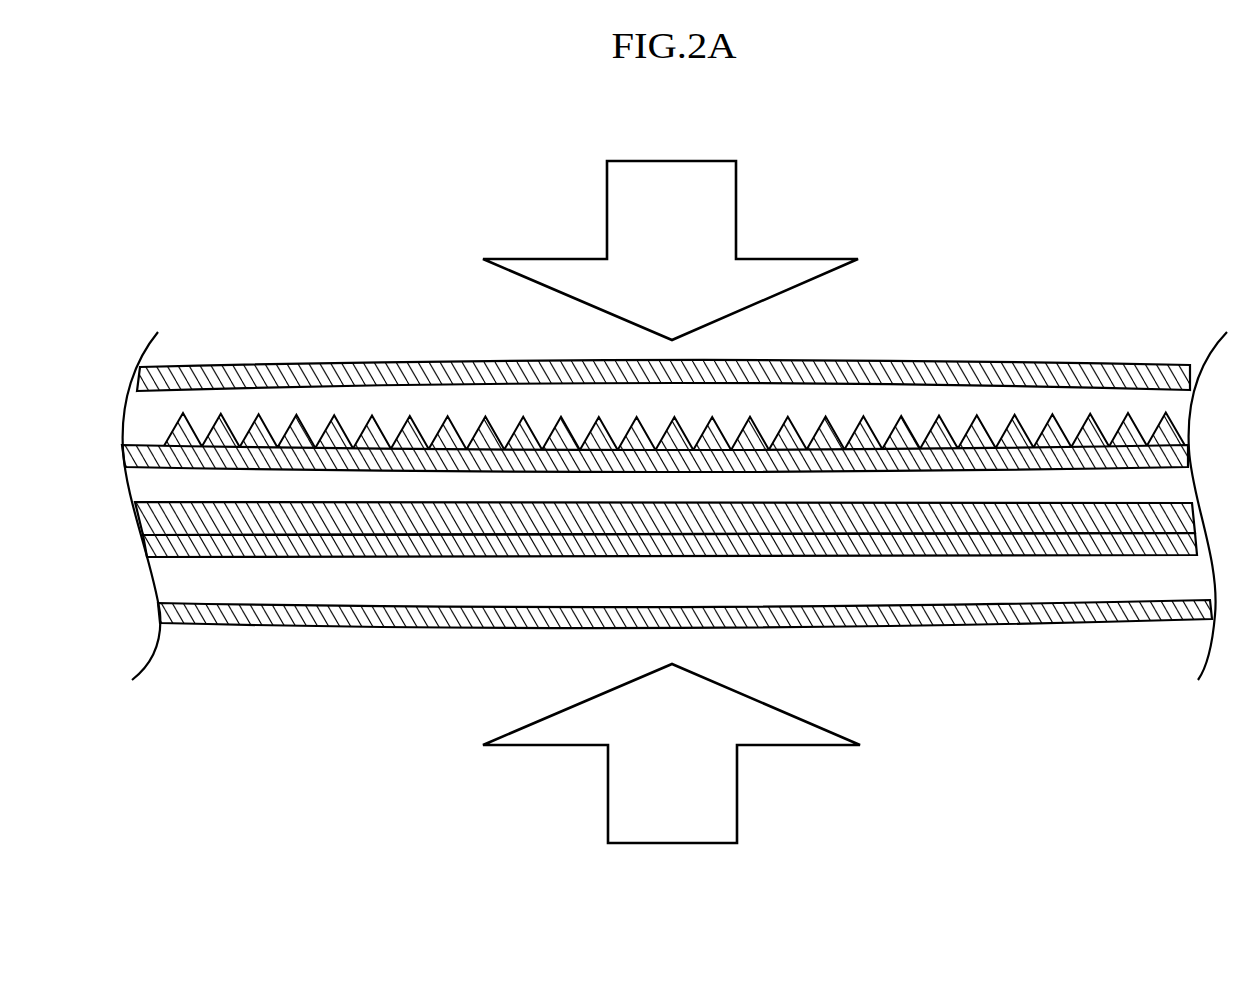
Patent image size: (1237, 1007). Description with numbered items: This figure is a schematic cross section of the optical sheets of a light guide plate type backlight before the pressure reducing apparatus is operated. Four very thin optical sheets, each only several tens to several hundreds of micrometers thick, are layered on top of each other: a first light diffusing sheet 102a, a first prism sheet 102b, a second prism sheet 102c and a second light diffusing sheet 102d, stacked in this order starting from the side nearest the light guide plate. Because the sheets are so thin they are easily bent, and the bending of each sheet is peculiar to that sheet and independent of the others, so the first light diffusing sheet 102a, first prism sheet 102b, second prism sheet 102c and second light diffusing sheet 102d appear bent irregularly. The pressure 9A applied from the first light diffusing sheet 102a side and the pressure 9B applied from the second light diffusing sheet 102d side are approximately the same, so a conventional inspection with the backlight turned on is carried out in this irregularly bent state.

The first light diffusing sheet 102a is at (283, 612).
The first prism sheet 102b is at (1038, 520).
The second prism sheet 102c is at (1052, 453).
The second light diffusing sheet 102d is at (310, 373).
The pressure 9A is at (738, 812).
The pressure 9B is at (737, 218).